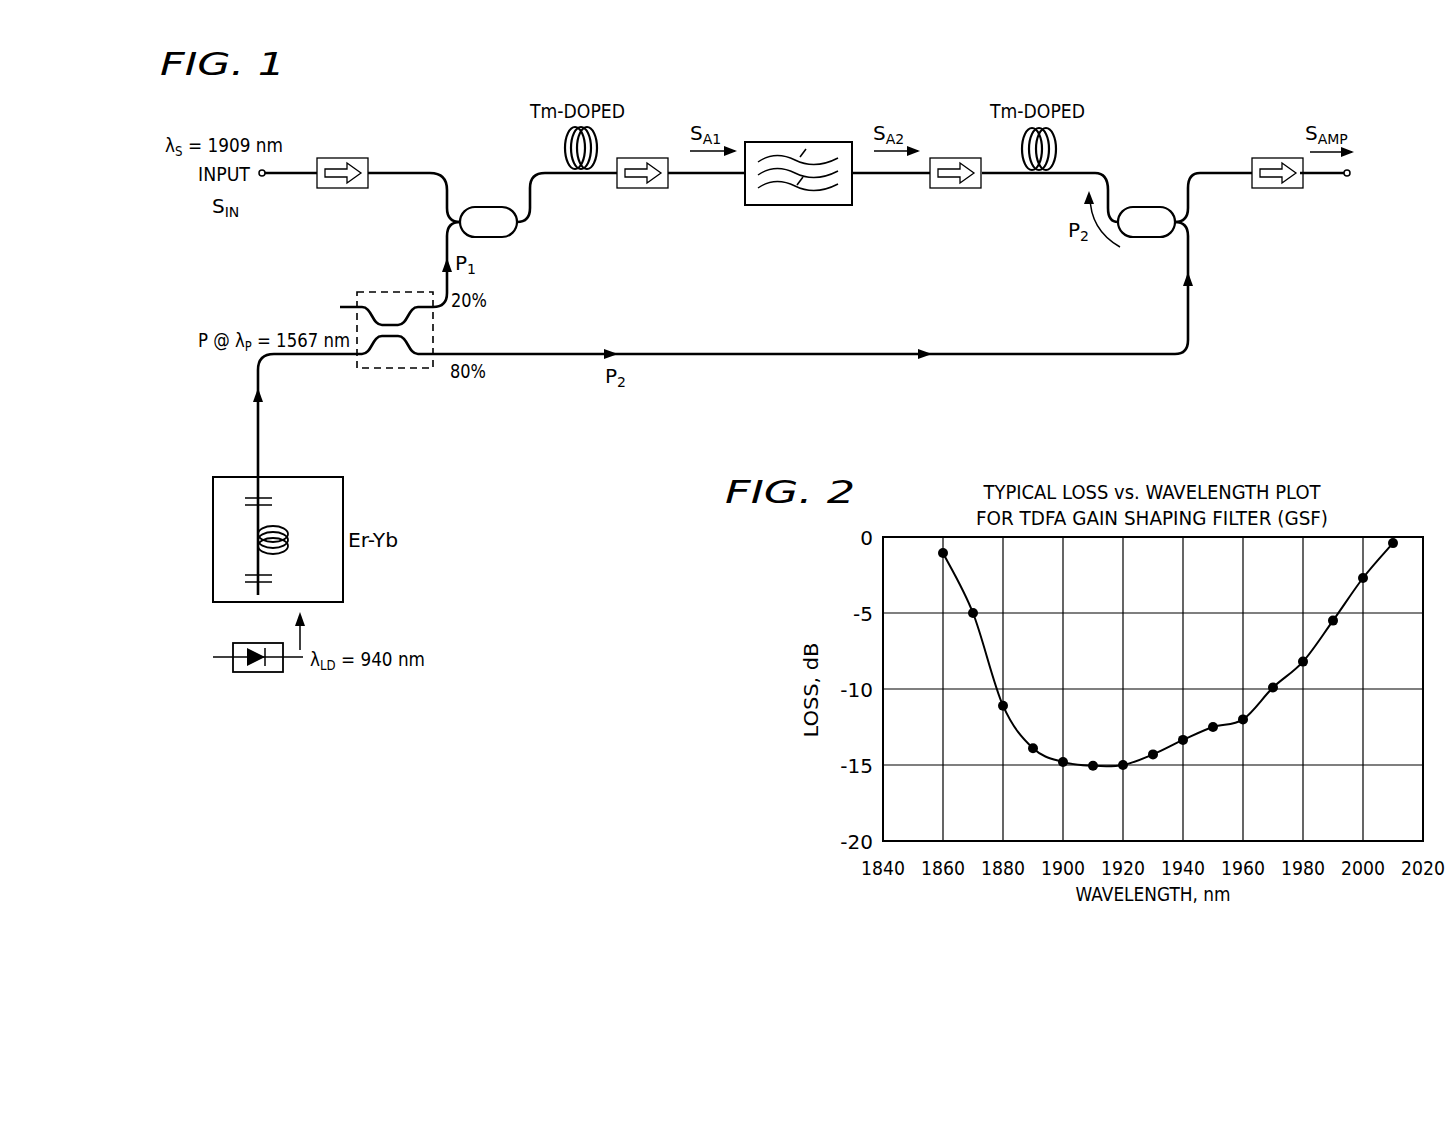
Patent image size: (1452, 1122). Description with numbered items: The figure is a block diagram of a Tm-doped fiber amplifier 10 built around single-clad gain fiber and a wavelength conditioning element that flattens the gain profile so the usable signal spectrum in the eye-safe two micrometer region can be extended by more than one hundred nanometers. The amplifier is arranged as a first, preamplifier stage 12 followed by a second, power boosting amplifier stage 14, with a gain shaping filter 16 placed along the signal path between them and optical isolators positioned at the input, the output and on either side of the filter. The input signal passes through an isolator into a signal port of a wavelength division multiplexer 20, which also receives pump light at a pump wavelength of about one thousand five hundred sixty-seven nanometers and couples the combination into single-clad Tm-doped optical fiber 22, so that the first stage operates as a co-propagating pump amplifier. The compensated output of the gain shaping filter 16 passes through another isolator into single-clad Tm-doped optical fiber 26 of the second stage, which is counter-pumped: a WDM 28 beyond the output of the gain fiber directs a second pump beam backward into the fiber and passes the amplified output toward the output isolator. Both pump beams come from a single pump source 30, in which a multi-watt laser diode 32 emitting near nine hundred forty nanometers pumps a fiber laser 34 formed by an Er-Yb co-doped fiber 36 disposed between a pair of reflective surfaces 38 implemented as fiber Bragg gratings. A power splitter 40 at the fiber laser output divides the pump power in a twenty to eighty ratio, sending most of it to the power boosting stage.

The Tm-doped fiber amplifier 10 is at (142, 130).
The first amplifier stage 12 is at (605, 92).
The second amplifier stage 14 is at (1178, 90).
The gain shaping filter 16 is at (798, 142).
The wavelength division multiplexer 20 is at (487, 207).
The single-clad Tm-doped optical fiber 22 is at (596, 145).
The single-clad Tm-doped optical fiber 26 is at (1056, 145).
The WDM 28 is at (1144, 207).
The pump source 30 is at (203, 468).
The laser diode 32 is at (258, 672).
The fiber laser 34 is at (293, 477).
The Er-Yb co-doped fiber 36 is at (289, 541).
The reflective surfaces 38 is at (275, 501).
The power splitter 40 is at (394, 291).